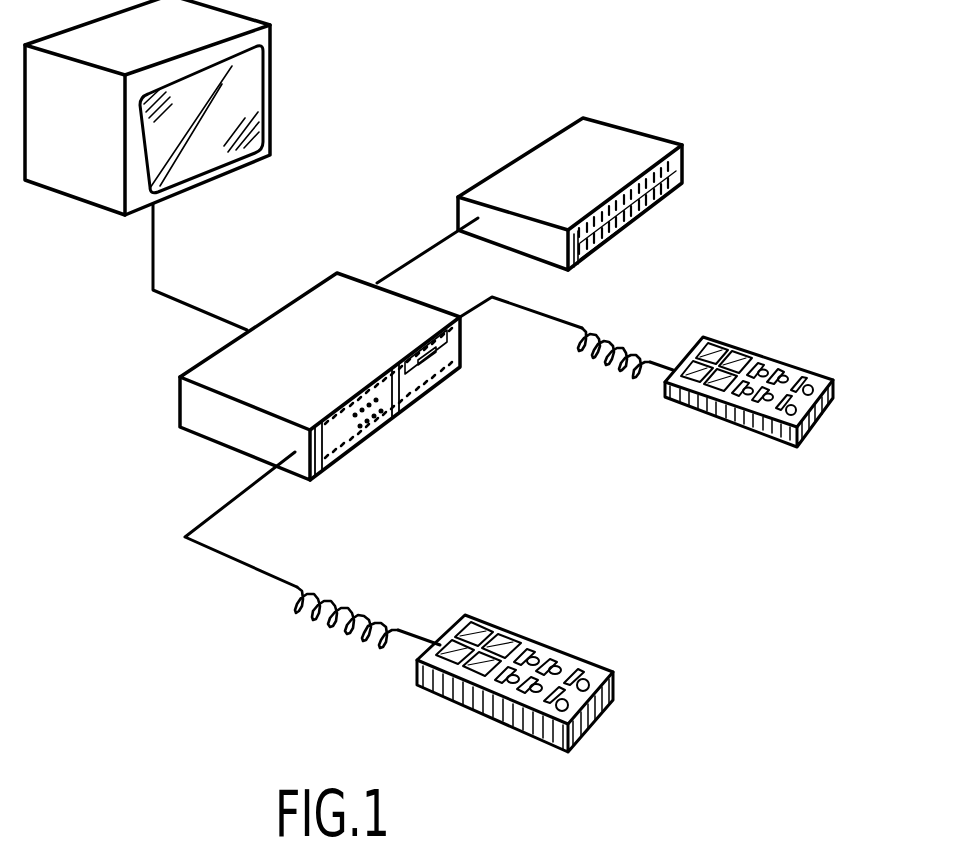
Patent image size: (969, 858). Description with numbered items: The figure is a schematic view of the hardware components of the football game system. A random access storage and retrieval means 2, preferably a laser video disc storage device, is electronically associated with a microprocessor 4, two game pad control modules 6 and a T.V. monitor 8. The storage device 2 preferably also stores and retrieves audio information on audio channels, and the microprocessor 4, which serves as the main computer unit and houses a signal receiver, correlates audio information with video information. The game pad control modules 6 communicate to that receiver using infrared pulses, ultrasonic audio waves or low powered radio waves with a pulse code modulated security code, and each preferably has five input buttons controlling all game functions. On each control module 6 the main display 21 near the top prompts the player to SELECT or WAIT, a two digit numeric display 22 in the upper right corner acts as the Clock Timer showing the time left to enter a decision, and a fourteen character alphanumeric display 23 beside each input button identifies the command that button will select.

The T.V. monitor 8 is at (263, 72).
The random access storage and retrieval means 2 is at (530, 167).
The microprocessor 4 is at (315, 307).
The game pad control module 6 is at (655, 511).
The main display 21 is at (690, 363).
The two digit numeric display 22 is at (755, 360).
The alphanumeric display 23 is at (837, 403).